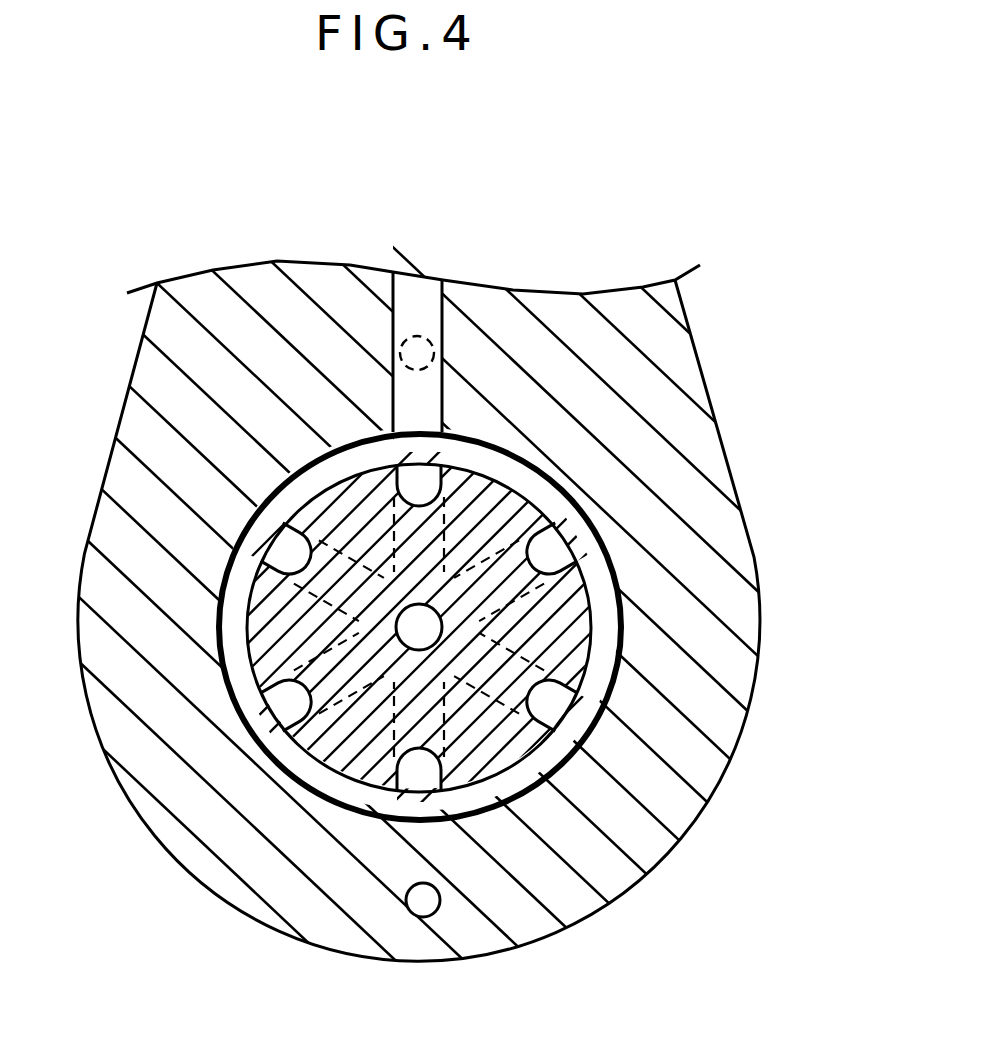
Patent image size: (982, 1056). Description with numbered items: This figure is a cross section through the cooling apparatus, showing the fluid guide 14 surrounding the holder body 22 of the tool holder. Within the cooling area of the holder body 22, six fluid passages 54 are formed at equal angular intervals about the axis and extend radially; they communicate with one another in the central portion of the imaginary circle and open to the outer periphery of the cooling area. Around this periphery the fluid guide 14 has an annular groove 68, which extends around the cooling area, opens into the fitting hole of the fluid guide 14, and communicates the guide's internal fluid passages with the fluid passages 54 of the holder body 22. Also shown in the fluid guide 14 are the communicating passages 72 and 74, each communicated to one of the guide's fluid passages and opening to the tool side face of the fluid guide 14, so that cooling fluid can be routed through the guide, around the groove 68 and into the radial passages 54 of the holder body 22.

The fluid guide 14 is at (704, 330).
The holder body 22 is at (550, 506).
The fluid passages 54 is at (412, 484).
The annular groove 68 is at (556, 758).
The communicating passage 72 is at (410, 336).
The communicating passage 74 is at (423, 917).